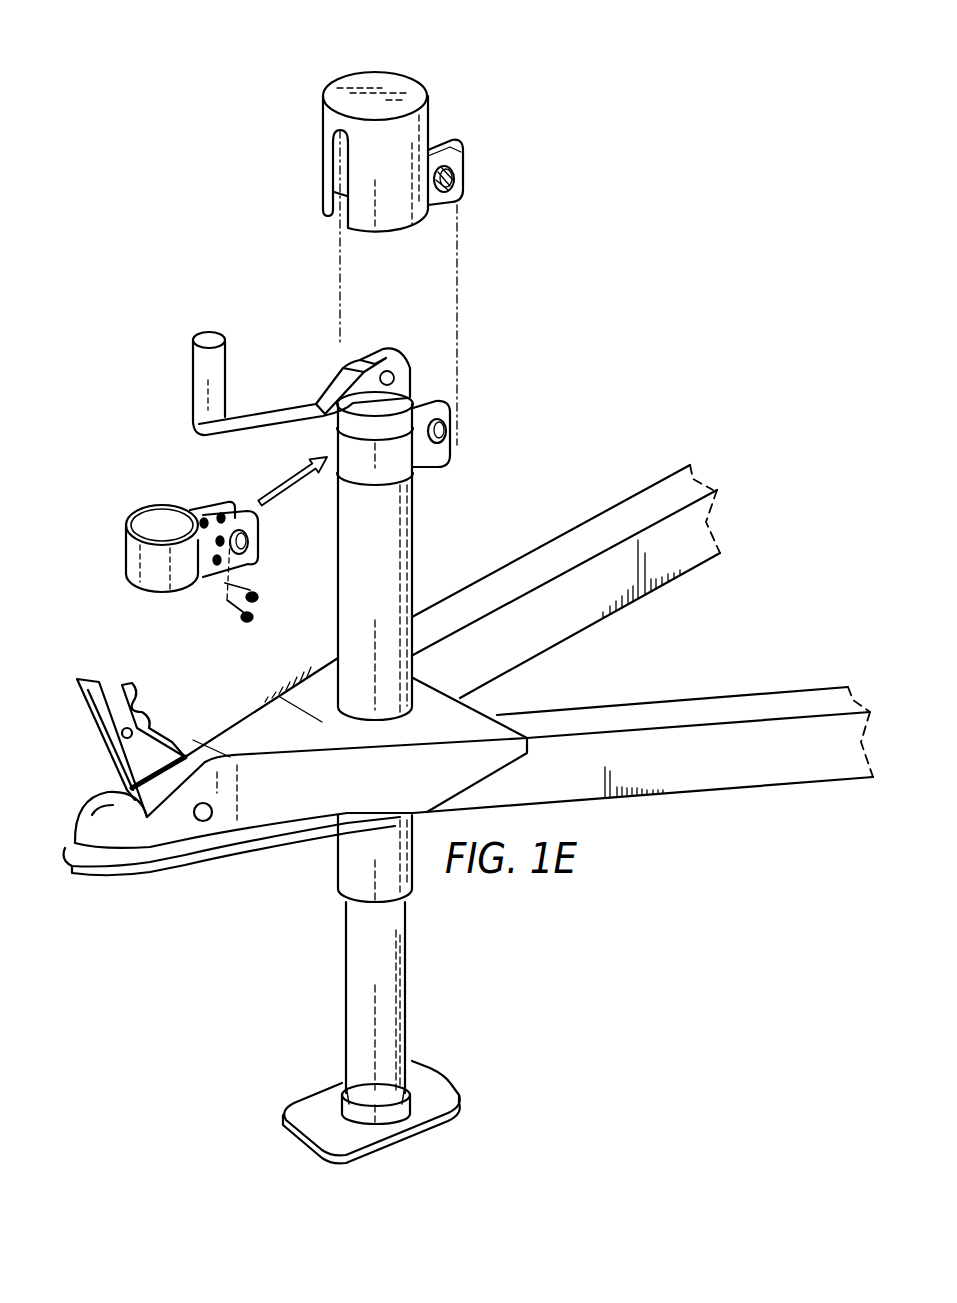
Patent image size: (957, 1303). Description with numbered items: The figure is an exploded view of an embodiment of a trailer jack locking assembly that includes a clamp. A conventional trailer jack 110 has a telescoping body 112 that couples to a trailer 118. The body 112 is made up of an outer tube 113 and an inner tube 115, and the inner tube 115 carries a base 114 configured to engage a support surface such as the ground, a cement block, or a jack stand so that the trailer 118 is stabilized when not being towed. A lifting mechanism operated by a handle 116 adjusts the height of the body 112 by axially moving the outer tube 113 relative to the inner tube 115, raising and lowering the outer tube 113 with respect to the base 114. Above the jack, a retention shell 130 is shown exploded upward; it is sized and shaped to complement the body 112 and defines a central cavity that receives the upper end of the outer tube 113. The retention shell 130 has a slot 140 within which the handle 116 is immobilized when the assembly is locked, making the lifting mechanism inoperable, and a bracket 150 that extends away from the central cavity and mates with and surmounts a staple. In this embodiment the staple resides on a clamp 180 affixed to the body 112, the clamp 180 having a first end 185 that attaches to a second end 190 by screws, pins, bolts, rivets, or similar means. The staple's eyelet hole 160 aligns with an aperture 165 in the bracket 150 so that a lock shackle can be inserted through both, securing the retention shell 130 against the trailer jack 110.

The trailer jack 110 is at (598, 313).
The telescoping body 112 is at (280, 638).
The outer tube 113 is at (412, 536).
The base 114 is at (437, 1090).
The inner tube 115 is at (352, 962).
The handle 116 is at (194, 372).
The trailer 118 is at (163, 827).
The retention shell 130 is at (364, 78).
The slot 140 is at (334, 151).
The bracket 150 is at (452, 141).
The eyelet hole 160 is at (255, 543).
The aperture 165 is at (455, 180).
The clamp 180 is at (127, 556).
The first end 185 is at (247, 561).
The second end 190 is at (210, 500).